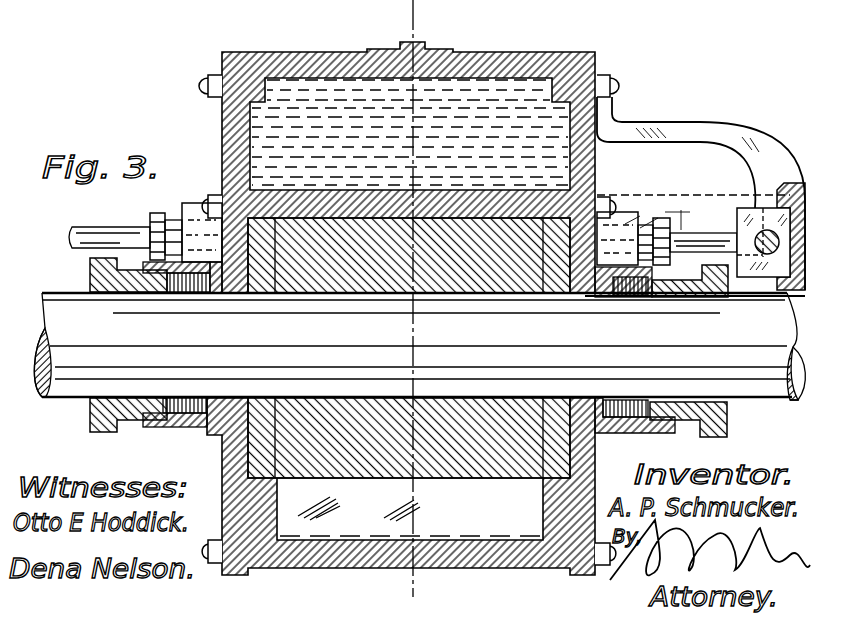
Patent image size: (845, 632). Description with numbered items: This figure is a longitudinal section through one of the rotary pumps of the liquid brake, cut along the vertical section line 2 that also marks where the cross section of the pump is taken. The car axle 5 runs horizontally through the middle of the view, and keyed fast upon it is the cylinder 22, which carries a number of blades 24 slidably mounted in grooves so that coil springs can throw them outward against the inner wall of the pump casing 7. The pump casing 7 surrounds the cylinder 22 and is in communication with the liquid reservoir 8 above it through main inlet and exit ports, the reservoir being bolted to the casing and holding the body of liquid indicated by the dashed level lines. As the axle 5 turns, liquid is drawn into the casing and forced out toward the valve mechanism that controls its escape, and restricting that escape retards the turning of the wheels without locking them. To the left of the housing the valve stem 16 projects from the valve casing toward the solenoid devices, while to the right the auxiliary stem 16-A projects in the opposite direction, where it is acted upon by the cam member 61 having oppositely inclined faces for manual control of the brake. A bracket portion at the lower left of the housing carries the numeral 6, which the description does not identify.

The section line 2 is at (413, 298).
The car axle 5 is at (419, 346).
The bearing bracket 6 is at (156, 362).
The pump casing 7 is at (485, 555).
The liquid reservoir 8 is at (493, 57).
The valve stem 16 is at (111, 232).
The auxiliary stem 16-A is at (694, 240).
The cylinder 22 is at (465, 458).
The blades 24 is at (410, 516).
The cam member 61 is at (752, 210).